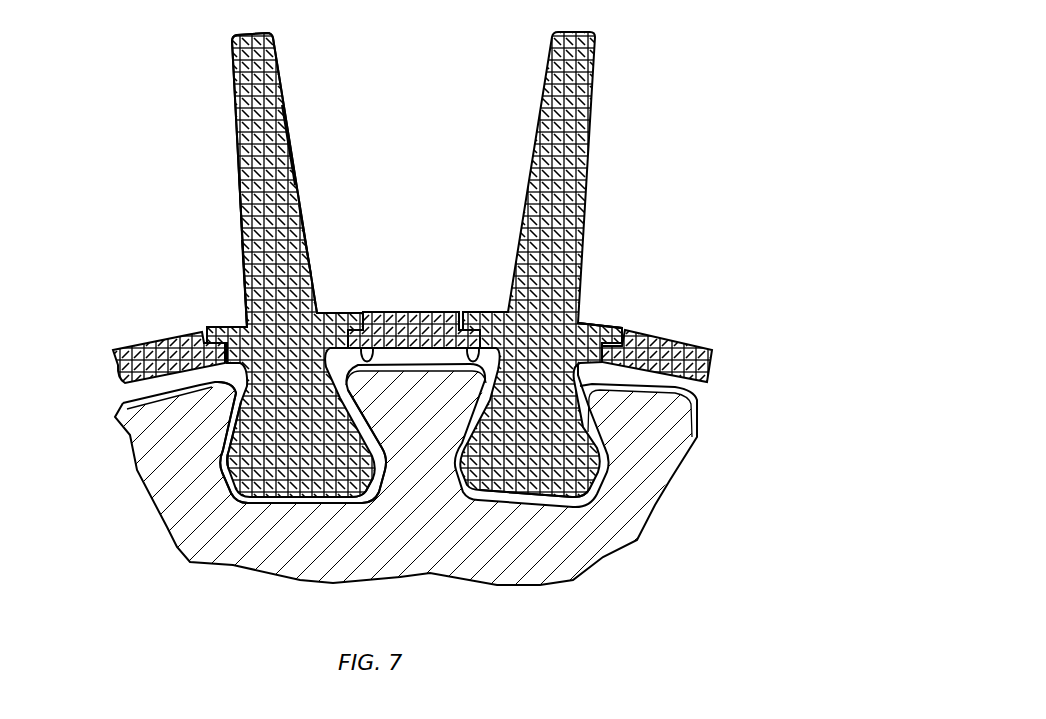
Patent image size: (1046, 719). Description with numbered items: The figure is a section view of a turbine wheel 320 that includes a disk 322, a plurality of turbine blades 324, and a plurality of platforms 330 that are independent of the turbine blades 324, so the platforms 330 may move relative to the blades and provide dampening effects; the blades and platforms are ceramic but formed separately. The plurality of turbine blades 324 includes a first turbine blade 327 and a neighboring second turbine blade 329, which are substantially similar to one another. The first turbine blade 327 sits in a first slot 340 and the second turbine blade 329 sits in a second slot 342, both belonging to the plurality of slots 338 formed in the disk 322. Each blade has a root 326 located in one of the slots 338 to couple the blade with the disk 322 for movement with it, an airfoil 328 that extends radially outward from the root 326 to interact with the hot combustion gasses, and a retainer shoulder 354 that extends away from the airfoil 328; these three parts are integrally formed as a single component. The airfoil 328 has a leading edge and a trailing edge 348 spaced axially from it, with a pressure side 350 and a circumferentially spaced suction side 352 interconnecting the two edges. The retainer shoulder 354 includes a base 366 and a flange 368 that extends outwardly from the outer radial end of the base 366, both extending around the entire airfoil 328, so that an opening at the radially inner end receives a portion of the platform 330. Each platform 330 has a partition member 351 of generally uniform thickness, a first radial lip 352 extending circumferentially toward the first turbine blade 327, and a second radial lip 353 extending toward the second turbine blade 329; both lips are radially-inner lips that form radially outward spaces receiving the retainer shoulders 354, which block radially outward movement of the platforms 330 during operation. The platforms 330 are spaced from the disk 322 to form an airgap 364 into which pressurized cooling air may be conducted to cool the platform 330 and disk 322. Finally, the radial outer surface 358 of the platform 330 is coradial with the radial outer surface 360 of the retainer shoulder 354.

The turbine wheel 320 is at (756, 97).
The disk 322 is at (187, 540).
The turbine blades 324 is at (213, 97).
The root 326 is at (245, 483).
The first turbine blade 327 is at (300, 94).
The airfoil 328 is at (240, 202).
The second turbine blade 329 is at (522, 104).
The platforms 330 is at (394, 290).
The slots 338 is at (271, 508).
The first slot 340 is at (343, 506).
The second slot 342 is at (532, 499).
The trailing edge 348 is at (282, 134).
The pressure side 350 is at (303, 237).
The partition member 351 is at (418, 318).
The suction side 352 is at (240, 248).
The second radial lip 353 is at (487, 310).
The retainer shoulder 354 is at (220, 325).
The radial outer surface of the platform 358 is at (678, 337).
The radial outer surface of the retainer shoulder 360 is at (600, 323).
The airgap 364 is at (700, 393).
The base 366 is at (123, 403).
The flange 368 is at (165, 343).